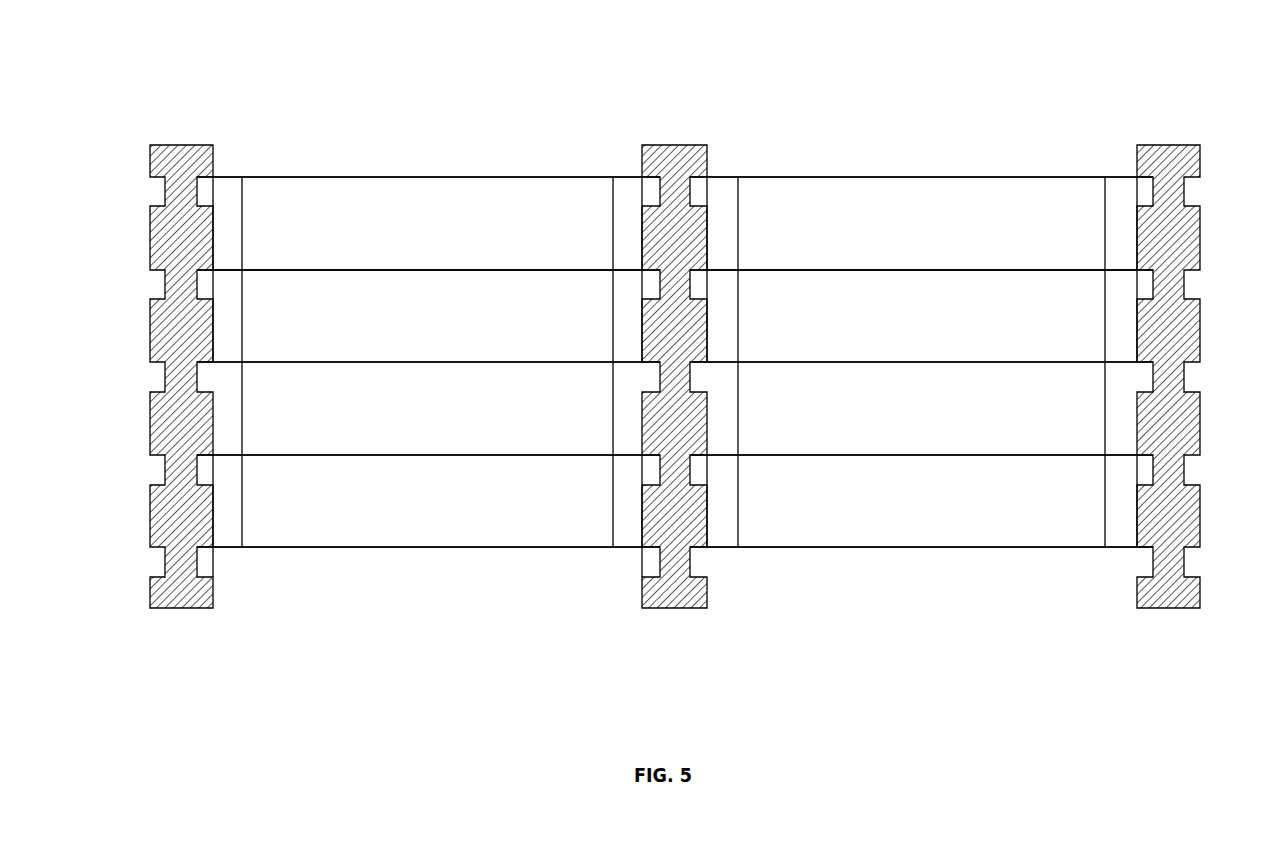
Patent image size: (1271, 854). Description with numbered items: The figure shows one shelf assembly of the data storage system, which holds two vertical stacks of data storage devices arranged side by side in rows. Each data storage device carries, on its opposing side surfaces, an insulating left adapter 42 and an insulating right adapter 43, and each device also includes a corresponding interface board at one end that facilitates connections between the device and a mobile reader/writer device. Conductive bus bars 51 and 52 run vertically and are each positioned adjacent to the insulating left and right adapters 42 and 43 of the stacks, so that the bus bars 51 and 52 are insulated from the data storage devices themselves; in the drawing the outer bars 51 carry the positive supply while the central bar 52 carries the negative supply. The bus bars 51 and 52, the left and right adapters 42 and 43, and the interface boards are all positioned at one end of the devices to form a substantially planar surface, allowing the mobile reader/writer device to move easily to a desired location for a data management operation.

The conductive bus bar 51 is at (181, 118).
The conductive bus bar 52 is at (675, 118).
The insulating left adapter 42 is at (239, 581).
The insulating right adapter 43 is at (619, 578).